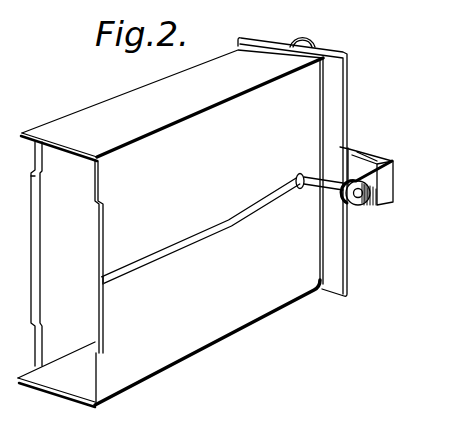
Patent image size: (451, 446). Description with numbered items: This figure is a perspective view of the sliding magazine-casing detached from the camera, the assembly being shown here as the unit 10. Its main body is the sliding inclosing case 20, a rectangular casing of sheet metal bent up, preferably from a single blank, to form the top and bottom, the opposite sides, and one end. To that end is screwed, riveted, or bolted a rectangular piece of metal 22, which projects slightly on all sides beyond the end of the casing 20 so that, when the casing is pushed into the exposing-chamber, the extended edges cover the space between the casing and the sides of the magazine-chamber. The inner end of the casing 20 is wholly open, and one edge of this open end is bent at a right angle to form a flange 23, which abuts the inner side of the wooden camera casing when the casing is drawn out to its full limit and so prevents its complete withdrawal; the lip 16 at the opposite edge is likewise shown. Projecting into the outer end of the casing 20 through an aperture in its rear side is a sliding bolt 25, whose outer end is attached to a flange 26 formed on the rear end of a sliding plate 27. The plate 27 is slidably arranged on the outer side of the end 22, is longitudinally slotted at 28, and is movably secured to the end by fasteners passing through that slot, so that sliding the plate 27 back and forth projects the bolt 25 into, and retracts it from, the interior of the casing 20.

The cigar lighter and ash receptacle support 10 is at (193, 222).
The flange 16 is at (30, 176).
The sliding inclosing case 20 is at (172, 105).
The rectangular piece of metal 22 is at (346, 95).
The flange 23 is at (35, 248).
The sliding bolt 25 is at (319, 191).
The flange 26 is at (369, 204).
The sliding plate 27 is at (390, 157).
The slot 28 is at (352, 153).